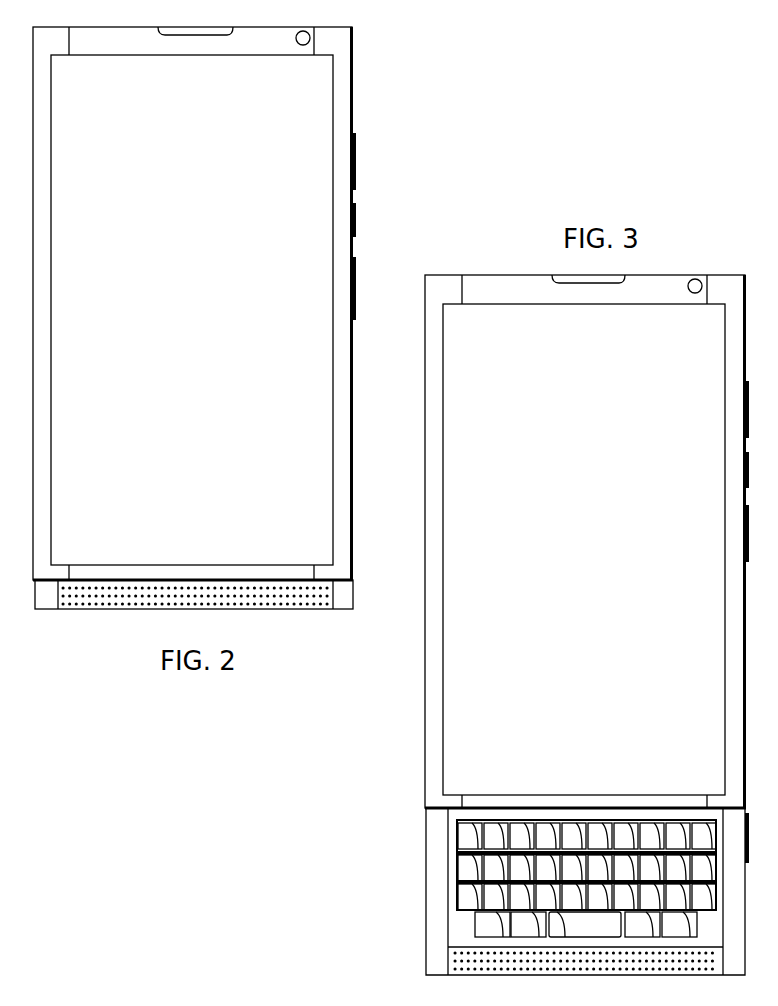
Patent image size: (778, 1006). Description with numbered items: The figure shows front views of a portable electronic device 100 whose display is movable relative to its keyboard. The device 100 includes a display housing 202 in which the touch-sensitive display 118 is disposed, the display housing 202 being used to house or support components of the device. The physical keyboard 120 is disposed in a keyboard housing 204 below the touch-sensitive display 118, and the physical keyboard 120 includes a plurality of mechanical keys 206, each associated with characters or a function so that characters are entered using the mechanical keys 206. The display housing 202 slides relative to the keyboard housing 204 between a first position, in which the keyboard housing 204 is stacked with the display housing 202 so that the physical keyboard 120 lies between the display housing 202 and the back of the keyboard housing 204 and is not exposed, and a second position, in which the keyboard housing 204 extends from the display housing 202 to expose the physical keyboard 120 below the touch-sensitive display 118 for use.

In FIG. 2, the portable electronic device 100 is at (392, 50).
In FIG. 3, the portable electronic device 100 is at (408, 965).
In FIG. 2, the display housing 202 is at (353, 113).
In FIG. 3, the display housing 202 is at (425, 670).
In FIG. 2, the touch-sensitive display 118 is at (313, 198).
In FIG. 3, the touch-sensitive display 118 is at (463, 745).
In FIG. 3, the keyboard housing 204 is at (427, 917).
In FIG. 3, the physical keyboard 120 is at (460, 888).
In FIG. 3, the mechanical keys 206 is at (467, 867).